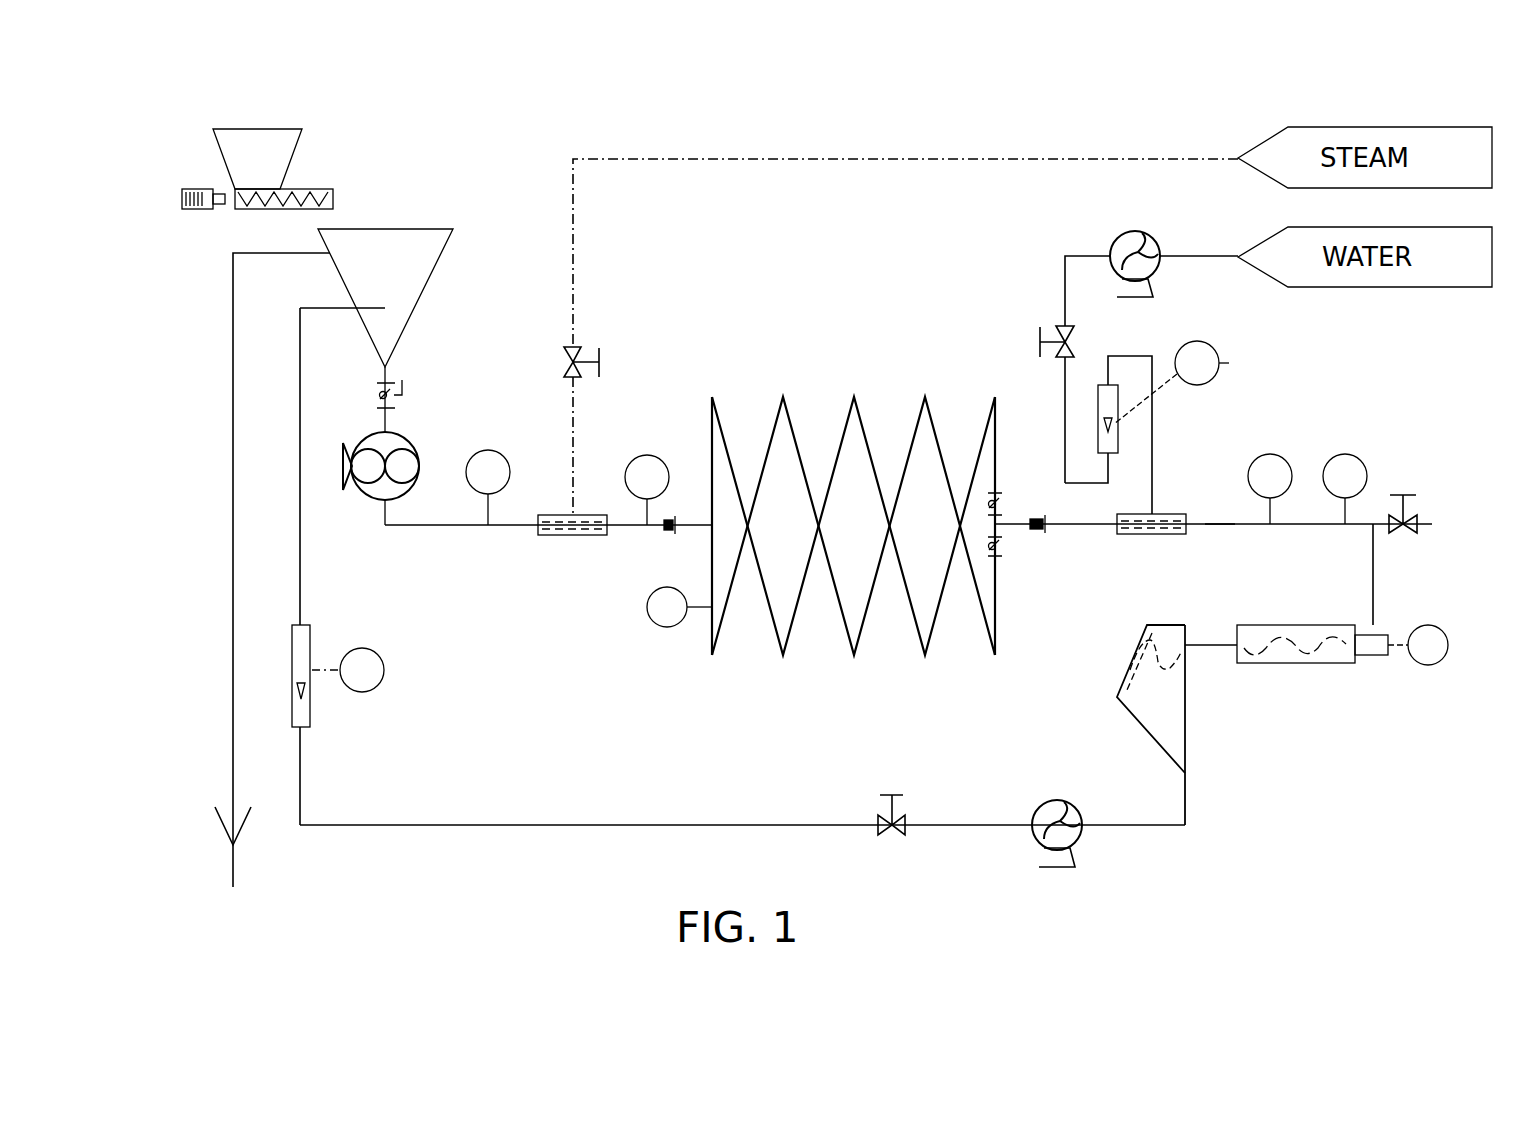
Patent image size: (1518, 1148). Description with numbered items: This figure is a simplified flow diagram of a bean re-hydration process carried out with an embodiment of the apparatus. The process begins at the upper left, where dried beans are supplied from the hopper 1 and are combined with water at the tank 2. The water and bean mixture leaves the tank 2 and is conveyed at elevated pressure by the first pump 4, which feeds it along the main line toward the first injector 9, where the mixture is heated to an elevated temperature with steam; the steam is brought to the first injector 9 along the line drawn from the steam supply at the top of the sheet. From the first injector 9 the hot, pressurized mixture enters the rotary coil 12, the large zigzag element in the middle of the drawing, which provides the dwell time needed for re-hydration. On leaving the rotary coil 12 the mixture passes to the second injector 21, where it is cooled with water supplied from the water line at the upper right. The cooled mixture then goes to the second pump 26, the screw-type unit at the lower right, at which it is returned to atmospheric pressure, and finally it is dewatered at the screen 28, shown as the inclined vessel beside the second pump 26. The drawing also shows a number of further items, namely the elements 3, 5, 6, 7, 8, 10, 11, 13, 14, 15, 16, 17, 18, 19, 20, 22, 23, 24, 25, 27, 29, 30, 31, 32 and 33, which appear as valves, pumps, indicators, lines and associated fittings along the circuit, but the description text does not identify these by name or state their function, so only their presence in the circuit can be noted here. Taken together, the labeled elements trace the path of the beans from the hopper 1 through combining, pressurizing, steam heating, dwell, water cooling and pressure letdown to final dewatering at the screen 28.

The hopper 1 is at (300, 187).
The tank 2 is at (418, 228).
The valve V1 3 is at (402, 383).
The first pump 4 is at (400, 432).
The feed pipe 5 is at (437, 525).
The pressure indicator 6 is at (488, 450).
The steam line 7 is at (573, 208).
The steam valve V2 8 is at (580, 347).
The first injector 9 is at (575, 515).
The temperature indicator 10 is at (651, 455).
The back-pressure device 11 is at (664, 530).
The rotary coil 12 is at (775, 637).
The extruder motor 13 is at (667, 627).
The valve V4 14 is at (998, 492).
The valve V5 15 is at (1000, 552).
The orifice / restrictor 16 is at (1045, 530).
The water supply line 17 is at (1203, 258).
The water pump P4 18 is at (1112, 232).
The valve V3 19 is at (1060, 328).
The flow indicator 20 is at (1167, 427).
The second injector 21 is at (1148, 536).
The outlet pipe 22 is at (1220, 524).
The pressure indicator 23 is at (1270, 454).
The temperature indicator 24 is at (1345, 454).
The valve V6 25 is at (1408, 492).
The second pump 26 is at (1338, 665).
The feeder motor 27 is at (1428, 665).
The screen 28 is at (1190, 723).
The recycle pipe 29 is at (1186, 827).
The pump P3 30 is at (1057, 800).
The valve V7 31 is at (906, 828).
The flow indicator 32 is at (384, 670).
The outlet line 33 is at (233, 367).